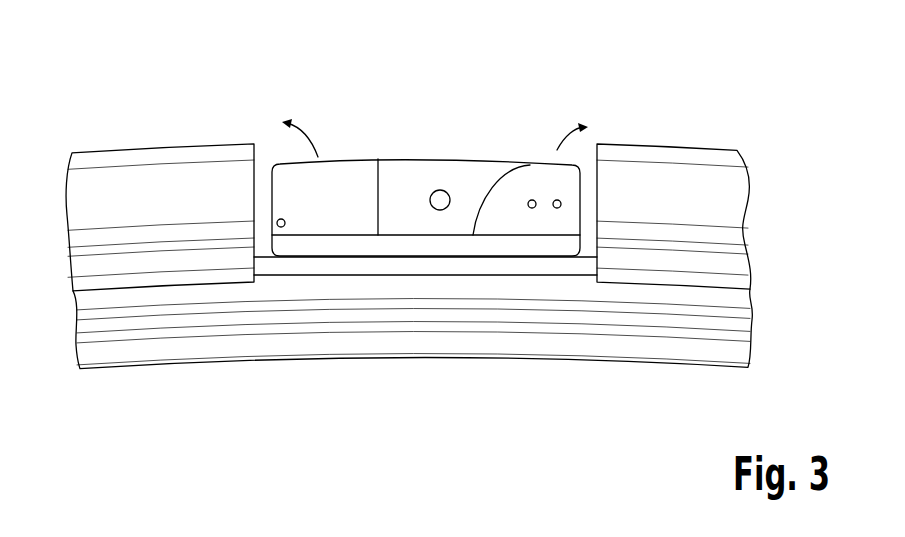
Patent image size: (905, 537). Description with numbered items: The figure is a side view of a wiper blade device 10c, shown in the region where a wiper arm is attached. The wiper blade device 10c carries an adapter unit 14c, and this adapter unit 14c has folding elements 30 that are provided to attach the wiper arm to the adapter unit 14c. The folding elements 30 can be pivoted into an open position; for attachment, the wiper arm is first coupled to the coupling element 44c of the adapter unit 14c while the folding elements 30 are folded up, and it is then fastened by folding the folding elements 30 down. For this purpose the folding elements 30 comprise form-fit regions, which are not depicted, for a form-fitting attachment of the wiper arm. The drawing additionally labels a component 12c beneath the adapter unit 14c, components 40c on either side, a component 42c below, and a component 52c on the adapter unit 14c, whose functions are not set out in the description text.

The wiper blade device 10c is at (606, 105).
The carrier / base plate 12c is at (492, 243).
The adapter unit 14c is at (440, 132).
The folding elements 30 is at (329, 179).
The adjacent housing parts 40c is at (150, 168).
The base body 42c is at (635, 337).
The coupling element 44c is at (406, 183).
The fastening opening 52c is at (440, 198).